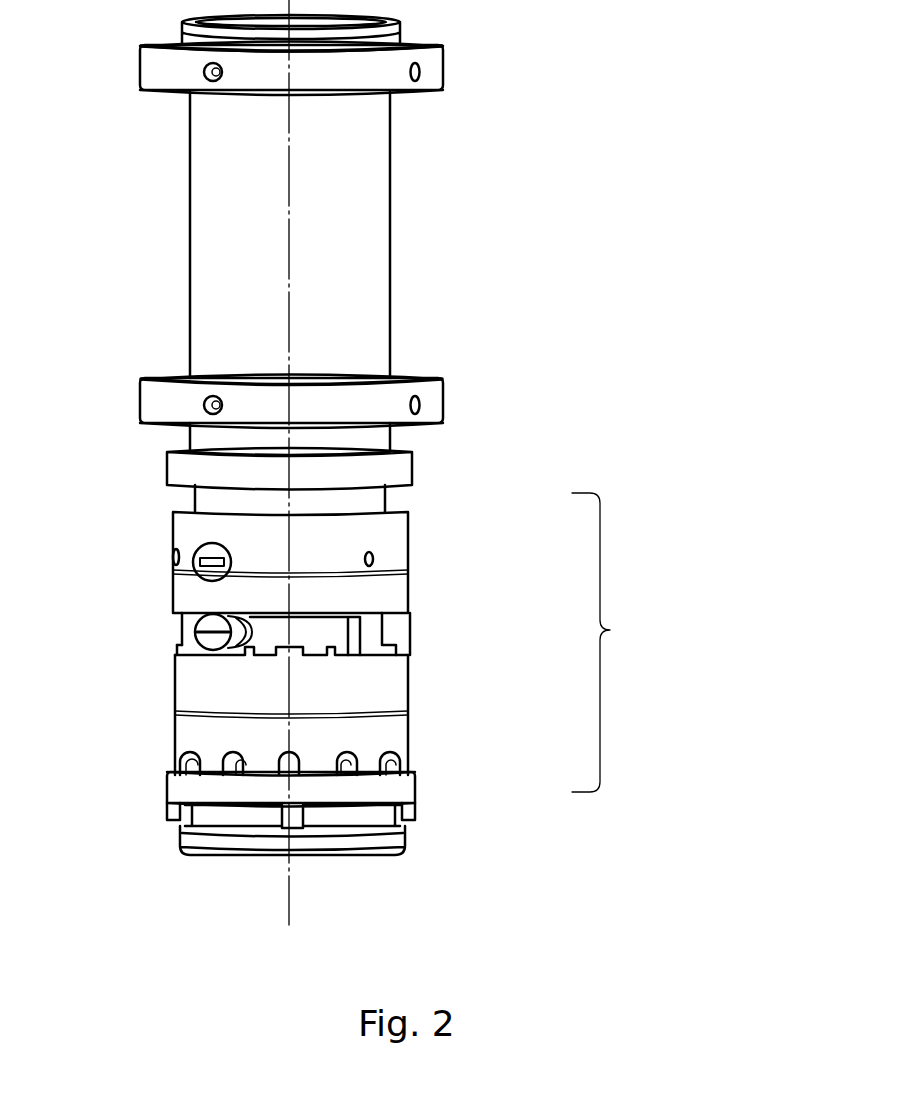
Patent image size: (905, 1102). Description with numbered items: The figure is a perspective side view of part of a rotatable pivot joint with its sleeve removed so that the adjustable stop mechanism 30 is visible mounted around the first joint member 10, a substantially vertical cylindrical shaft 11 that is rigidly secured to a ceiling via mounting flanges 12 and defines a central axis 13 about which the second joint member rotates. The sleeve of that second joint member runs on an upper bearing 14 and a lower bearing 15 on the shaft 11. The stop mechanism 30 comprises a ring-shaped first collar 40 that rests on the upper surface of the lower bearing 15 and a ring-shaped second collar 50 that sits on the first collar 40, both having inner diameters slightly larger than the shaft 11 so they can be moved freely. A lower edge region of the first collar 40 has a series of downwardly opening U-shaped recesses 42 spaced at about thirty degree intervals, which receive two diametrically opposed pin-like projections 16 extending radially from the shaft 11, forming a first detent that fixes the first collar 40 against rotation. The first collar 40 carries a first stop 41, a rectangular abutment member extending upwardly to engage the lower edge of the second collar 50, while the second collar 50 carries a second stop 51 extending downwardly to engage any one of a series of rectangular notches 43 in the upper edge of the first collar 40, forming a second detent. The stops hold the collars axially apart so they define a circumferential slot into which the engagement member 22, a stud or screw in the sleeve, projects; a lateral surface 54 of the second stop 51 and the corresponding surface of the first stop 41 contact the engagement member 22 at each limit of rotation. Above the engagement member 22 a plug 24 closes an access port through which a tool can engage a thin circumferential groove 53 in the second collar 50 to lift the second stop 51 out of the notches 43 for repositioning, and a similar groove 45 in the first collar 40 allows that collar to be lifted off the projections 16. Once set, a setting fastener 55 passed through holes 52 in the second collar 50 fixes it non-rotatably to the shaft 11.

The first joint member 10 is at (334, 196).
The shaft 11 is at (210, 300).
The mounting flanges 12 is at (157, 78).
The central axis 13 is at (289, 286).
The upper bearing 14 is at (172, 470).
The lower bearing 15 is at (175, 795).
The pin-like projection 16 is at (405, 762).
The engagement member 22 is at (198, 628).
The plug 24 is at (217, 557).
The adjustable stop mechanism 30 is at (615, 642).
The first collar 40 is at (280, 724).
The first stop 41 is at (266, 634).
The U-shaped recesses 42 is at (347, 772).
The rectangular notches 43 is at (290, 663).
The circumferential groove 45 is at (170, 714).
The second collar 50 is at (317, 534).
The second stop 51 is at (400, 625).
The holes 52 is at (367, 557).
The circumferential groove 53 is at (408, 571).
The lateral surface 54 is at (347, 628).
The setting fastener 55 is at (407, 505).